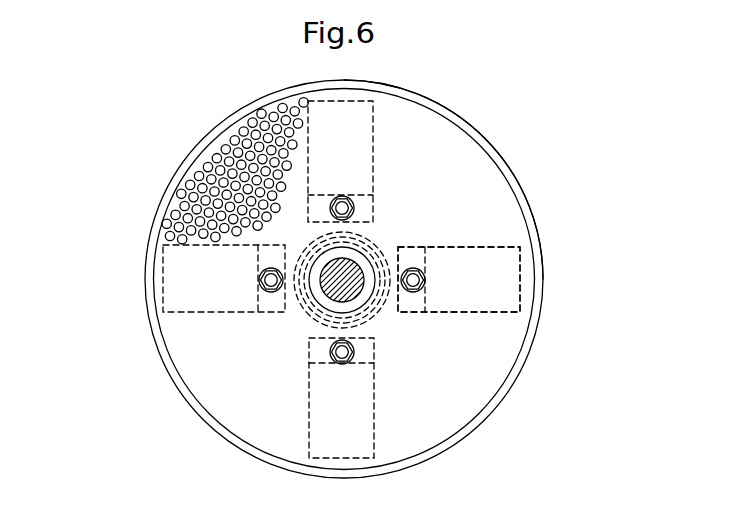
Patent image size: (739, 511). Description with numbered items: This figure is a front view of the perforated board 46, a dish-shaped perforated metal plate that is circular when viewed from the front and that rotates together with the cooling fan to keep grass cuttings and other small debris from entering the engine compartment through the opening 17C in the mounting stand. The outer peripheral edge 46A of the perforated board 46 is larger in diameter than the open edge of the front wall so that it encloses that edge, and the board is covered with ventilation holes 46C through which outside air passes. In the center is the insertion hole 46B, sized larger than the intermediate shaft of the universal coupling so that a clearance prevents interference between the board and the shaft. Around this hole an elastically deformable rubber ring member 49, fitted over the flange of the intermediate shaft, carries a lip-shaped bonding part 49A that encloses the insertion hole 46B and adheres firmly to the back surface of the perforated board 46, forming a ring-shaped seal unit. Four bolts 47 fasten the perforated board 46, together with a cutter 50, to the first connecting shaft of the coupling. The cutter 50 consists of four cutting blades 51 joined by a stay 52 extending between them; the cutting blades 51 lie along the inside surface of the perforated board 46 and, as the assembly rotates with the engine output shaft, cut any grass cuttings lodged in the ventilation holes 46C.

The perforated board 46 is at (492, 146).
The outer peripheral edge 46A is at (513, 188).
The insertion hole 46B is at (322, 291).
The ventilation holes 46C is at (205, 150).
The bolts 47 is at (342, 197).
The ring member 49 is at (380, 242).
The bonding part 49A is at (385, 246).
The cutter 50 is at (492, 313).
The cutting blades 51 is at (376, 162).
The stay 52 is at (385, 318).
The opening 17C is at (520, 243).